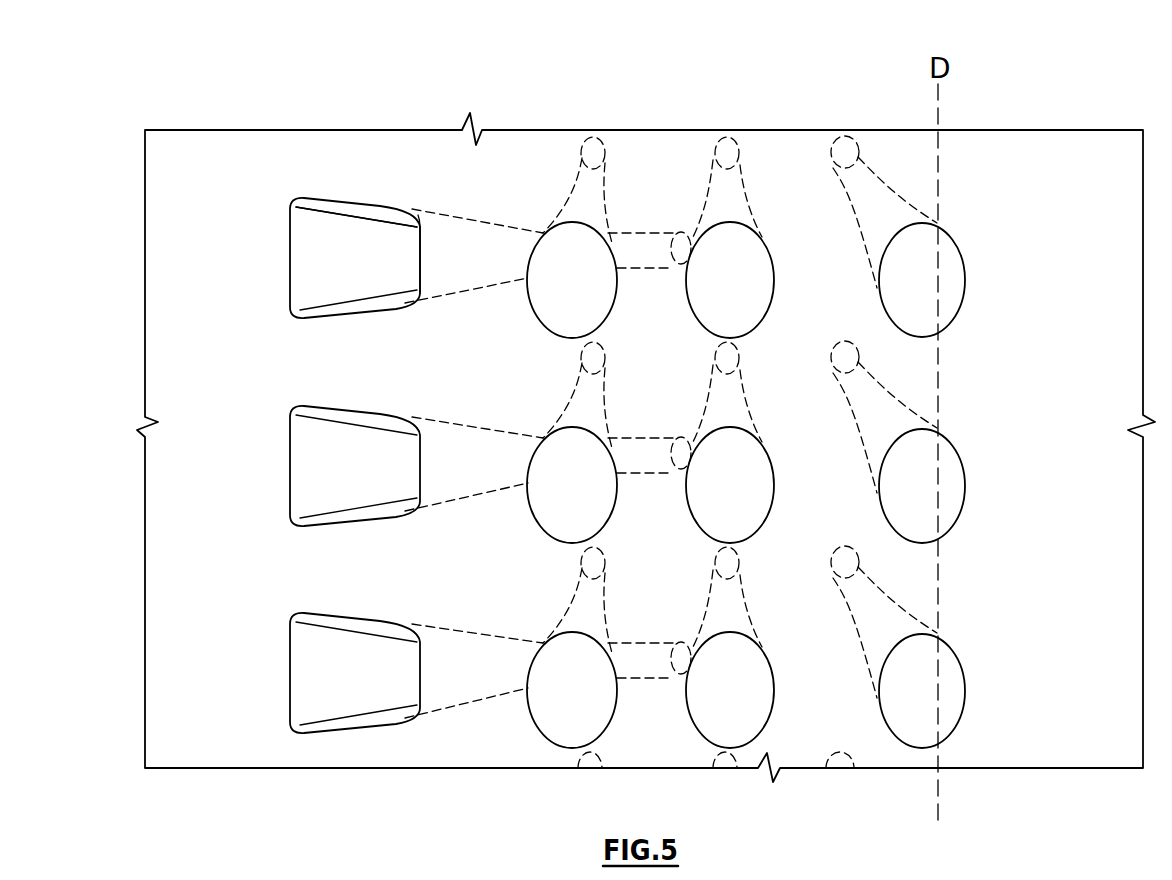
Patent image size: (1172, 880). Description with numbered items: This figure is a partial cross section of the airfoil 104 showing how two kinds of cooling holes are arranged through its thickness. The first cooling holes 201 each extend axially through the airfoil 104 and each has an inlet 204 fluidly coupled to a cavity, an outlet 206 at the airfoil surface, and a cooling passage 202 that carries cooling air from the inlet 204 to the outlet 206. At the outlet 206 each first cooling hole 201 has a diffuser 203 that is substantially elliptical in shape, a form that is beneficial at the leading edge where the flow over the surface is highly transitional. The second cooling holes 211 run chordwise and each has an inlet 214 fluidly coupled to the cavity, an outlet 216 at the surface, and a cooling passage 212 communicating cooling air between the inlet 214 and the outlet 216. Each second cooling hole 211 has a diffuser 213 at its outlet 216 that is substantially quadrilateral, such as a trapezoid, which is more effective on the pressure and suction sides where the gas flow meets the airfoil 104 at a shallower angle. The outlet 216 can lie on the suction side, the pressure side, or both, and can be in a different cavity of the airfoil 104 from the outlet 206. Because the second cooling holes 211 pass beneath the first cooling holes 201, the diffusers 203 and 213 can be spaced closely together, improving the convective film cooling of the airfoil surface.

The airfoil 104 is at (1050, 109).
The first cooling hole 201 is at (584, 213).
The cooling passage 202 is at (578, 152).
The diffuser 203 is at (953, 260).
The inlet 204 is at (594, 142).
The outlet 206 is at (765, 263).
The second cooling hole 211 is at (386, 205).
The cooling passage 212 is at (644, 248).
The diffuser 213 is at (422, 240).
The inlet 214 is at (690, 236).
The outlet 216 is at (320, 207).